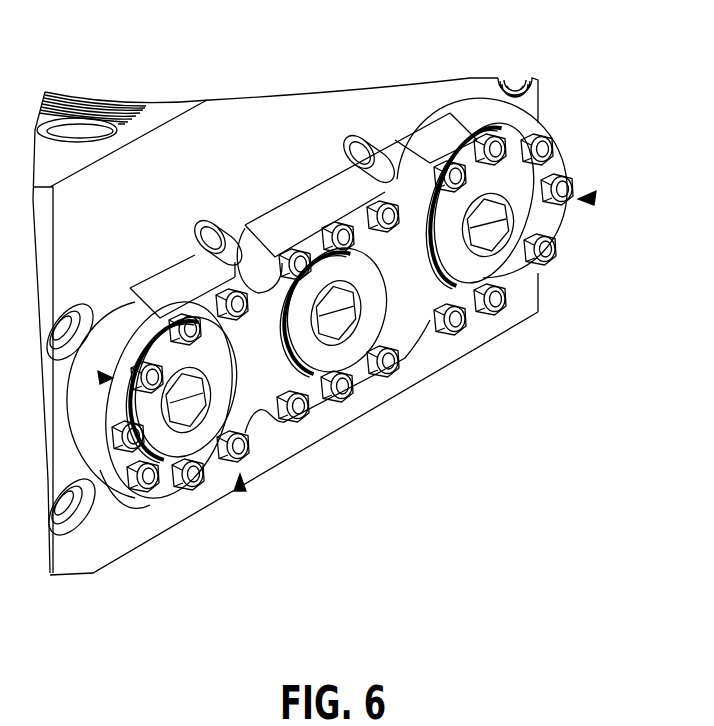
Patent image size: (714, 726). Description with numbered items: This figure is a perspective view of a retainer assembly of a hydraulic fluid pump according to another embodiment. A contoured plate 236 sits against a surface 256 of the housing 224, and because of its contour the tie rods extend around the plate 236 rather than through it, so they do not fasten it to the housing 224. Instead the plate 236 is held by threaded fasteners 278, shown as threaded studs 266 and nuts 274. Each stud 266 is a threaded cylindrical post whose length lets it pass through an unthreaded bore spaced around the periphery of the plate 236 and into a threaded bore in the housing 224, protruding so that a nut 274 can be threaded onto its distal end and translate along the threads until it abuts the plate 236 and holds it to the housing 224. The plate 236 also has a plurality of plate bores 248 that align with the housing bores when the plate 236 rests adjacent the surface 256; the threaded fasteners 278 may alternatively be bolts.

The housing 224 is at (297, 101).
The plate 236 is at (513, 130).
The plate bores 248 is at (168, 353).
The surface 256 is at (110, 543).
The threaded studs 266 is at (300, 418).
The nuts 274 is at (338, 392).
The threaded fasteners 278 is at (110, 380).